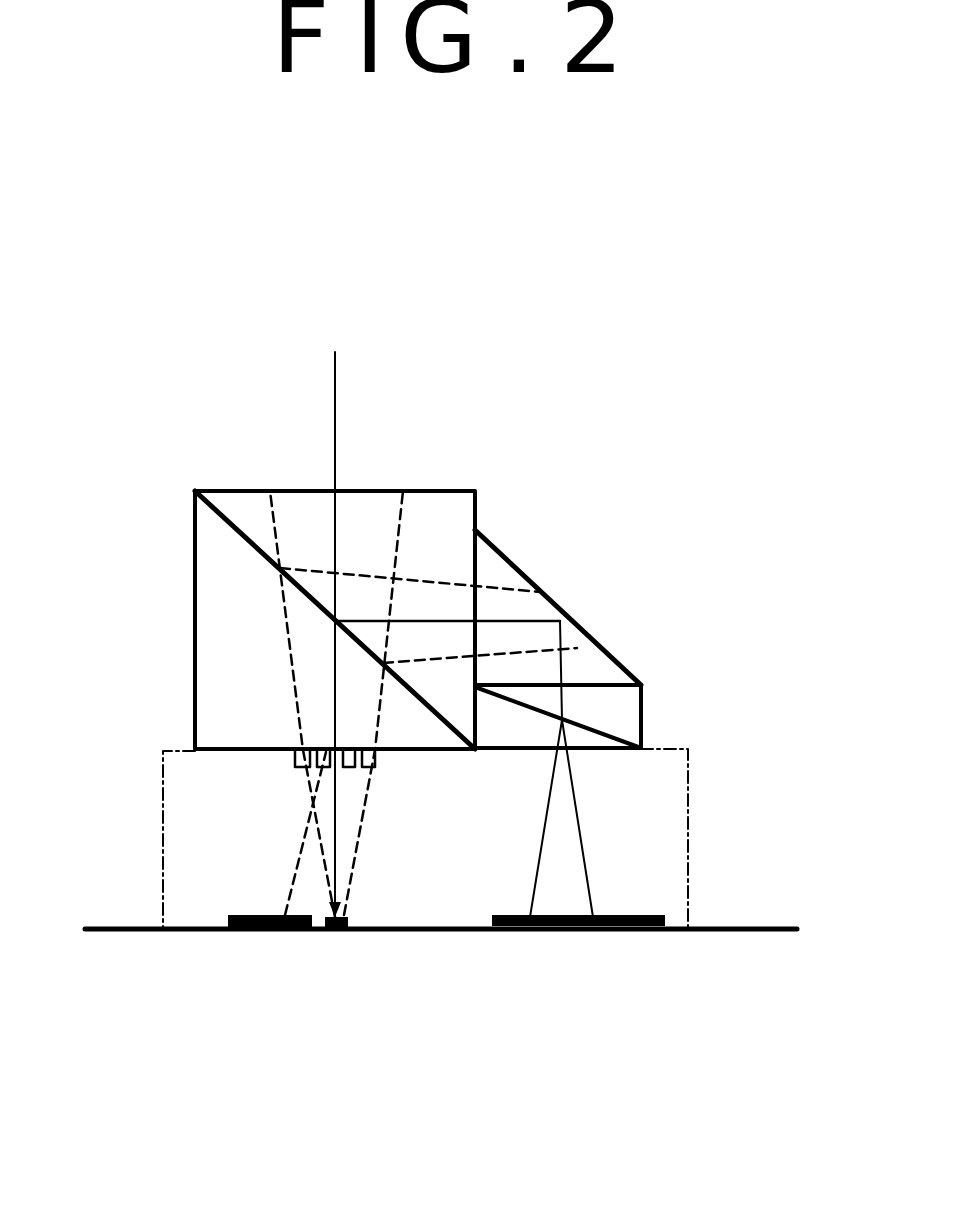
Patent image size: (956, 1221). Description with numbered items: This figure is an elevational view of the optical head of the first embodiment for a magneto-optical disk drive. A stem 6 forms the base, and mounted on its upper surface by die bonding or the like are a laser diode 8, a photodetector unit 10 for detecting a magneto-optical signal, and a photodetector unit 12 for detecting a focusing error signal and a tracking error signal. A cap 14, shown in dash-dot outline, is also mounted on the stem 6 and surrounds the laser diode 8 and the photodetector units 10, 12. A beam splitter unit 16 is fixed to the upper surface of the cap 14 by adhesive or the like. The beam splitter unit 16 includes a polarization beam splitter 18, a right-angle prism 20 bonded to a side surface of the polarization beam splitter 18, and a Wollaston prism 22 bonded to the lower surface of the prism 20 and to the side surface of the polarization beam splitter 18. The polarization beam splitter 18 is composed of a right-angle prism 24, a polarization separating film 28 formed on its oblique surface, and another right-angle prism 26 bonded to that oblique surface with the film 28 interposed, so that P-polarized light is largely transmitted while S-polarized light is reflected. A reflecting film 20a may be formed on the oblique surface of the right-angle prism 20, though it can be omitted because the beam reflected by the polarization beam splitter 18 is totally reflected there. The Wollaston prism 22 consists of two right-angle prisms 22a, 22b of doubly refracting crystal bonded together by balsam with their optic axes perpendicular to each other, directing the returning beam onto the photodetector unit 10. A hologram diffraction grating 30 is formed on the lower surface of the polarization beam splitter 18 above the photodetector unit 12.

The stem 6 is at (767, 923).
The laser diode 8 is at (337, 932).
The photodetector unit 10 is at (578, 931).
The photodetector unit 12 is at (258, 932).
The cap 14 is at (688, 832).
The beam splitter unit 16 is at (497, 513).
The polarization beam splitter 18 is at (375, 490).
The right-angle prism 20 is at (495, 578).
The reflecting film 20a is at (548, 608).
The Wollaston prism 22 is at (643, 715).
The right-angle prism 22a is at (628, 697).
The right-angle prism 22b is at (500, 737).
The right-angle prism 24 is at (208, 625).
The right-angle prism 26 is at (292, 491).
The polarization separating film 28 is at (258, 549).
The hologram diffraction grating 30 is at (298, 767).